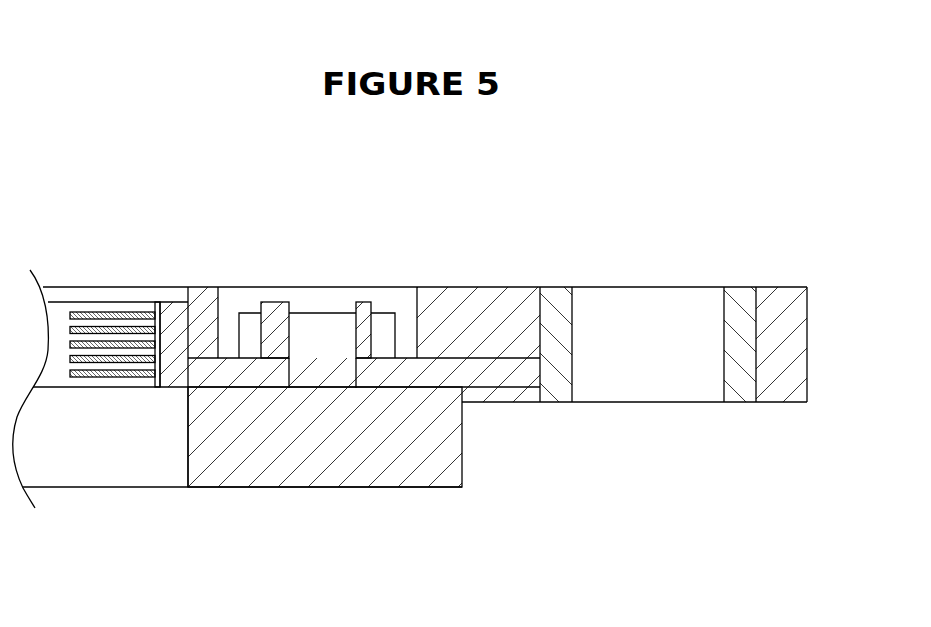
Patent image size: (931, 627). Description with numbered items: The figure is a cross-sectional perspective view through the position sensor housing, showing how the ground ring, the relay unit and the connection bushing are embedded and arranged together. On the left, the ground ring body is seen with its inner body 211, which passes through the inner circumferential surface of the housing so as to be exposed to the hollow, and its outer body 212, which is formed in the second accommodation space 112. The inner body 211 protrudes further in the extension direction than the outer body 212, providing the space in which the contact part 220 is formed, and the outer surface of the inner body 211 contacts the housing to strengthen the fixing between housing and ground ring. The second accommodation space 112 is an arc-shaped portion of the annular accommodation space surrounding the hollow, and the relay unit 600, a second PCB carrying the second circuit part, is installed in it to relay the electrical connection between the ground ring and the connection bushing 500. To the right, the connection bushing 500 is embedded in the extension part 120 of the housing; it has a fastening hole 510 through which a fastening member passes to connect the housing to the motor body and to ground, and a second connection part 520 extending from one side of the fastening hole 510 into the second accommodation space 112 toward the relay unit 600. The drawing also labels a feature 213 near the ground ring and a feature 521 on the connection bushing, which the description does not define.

The second accommodation space 112 is at (312, 307).
The extension part 120 is at (777, 321).
The inner body 211 is at (174, 322).
The outer body 212 is at (233, 373).
The protrusion / pin 213 is at (276, 316).
The contact part 220 is at (107, 375).
The connection bushing 500 is at (644, 528).
The fastening hole 510 is at (646, 342).
The second connection part 520 is at (498, 374).
The support protrusion 521 is at (363, 335).
The relay unit 600 is at (383, 323).